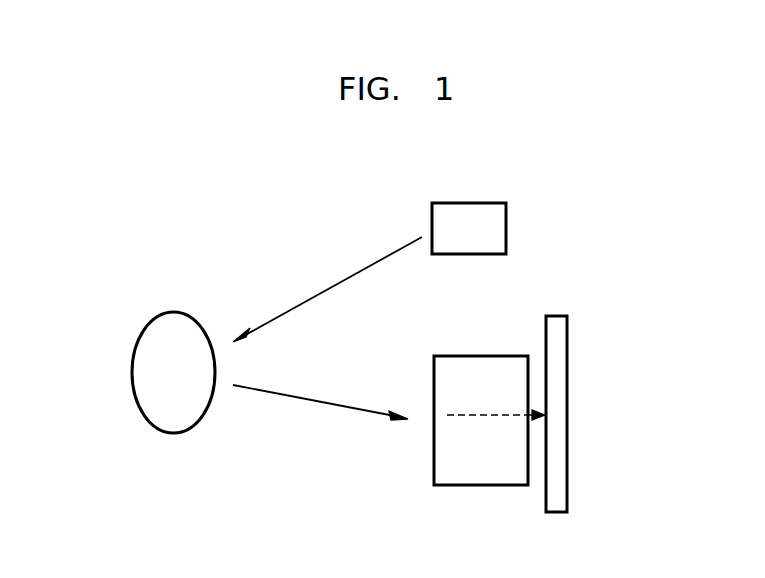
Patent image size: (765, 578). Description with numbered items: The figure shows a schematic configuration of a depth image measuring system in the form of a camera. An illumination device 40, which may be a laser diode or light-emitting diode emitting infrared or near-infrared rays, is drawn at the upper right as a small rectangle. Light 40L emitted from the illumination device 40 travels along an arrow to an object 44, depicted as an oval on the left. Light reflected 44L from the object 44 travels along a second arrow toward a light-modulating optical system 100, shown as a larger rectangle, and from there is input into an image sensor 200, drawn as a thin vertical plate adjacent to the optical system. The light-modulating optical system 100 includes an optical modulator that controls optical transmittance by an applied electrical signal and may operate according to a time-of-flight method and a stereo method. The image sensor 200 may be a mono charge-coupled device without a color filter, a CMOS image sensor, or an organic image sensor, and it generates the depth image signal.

The illumination device 40 is at (468, 202).
The light emitted from the illumination device 40L is at (323, 290).
The object 44 is at (170, 434).
The light reflected from the object 44L is at (305, 401).
The light-modulating optical system 100 is at (480, 486).
The image sensor 200 is at (557, 514).